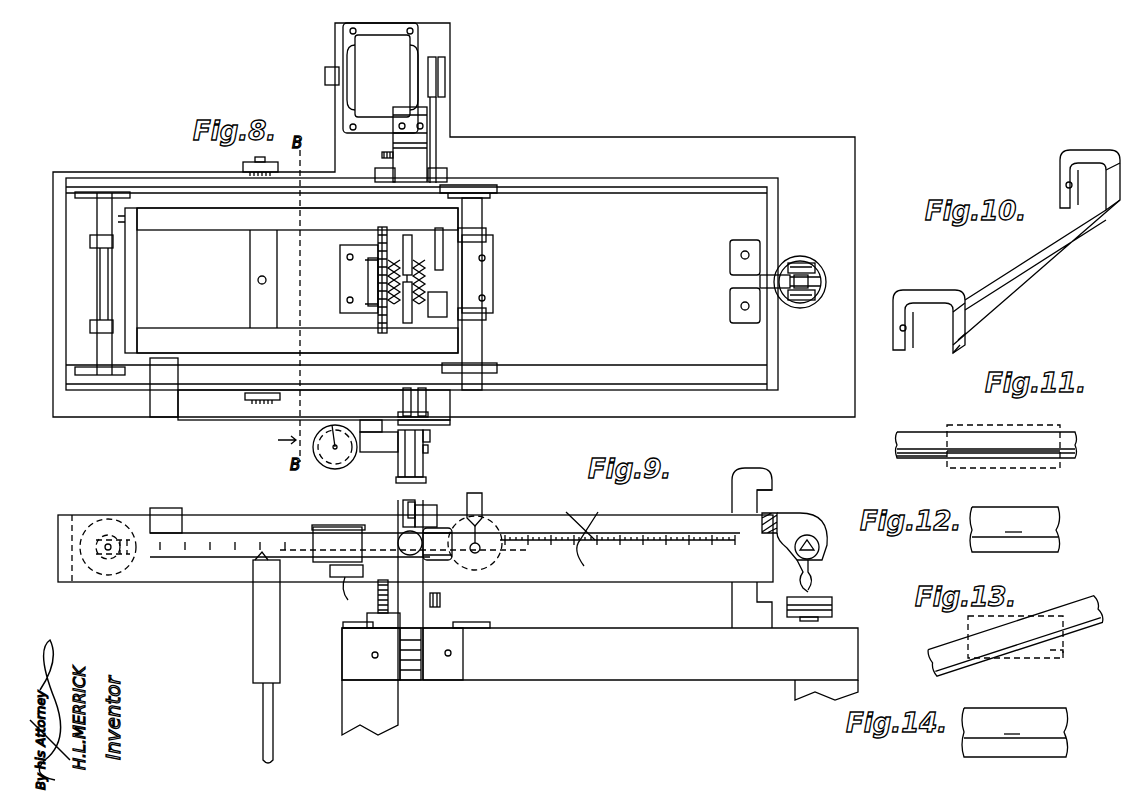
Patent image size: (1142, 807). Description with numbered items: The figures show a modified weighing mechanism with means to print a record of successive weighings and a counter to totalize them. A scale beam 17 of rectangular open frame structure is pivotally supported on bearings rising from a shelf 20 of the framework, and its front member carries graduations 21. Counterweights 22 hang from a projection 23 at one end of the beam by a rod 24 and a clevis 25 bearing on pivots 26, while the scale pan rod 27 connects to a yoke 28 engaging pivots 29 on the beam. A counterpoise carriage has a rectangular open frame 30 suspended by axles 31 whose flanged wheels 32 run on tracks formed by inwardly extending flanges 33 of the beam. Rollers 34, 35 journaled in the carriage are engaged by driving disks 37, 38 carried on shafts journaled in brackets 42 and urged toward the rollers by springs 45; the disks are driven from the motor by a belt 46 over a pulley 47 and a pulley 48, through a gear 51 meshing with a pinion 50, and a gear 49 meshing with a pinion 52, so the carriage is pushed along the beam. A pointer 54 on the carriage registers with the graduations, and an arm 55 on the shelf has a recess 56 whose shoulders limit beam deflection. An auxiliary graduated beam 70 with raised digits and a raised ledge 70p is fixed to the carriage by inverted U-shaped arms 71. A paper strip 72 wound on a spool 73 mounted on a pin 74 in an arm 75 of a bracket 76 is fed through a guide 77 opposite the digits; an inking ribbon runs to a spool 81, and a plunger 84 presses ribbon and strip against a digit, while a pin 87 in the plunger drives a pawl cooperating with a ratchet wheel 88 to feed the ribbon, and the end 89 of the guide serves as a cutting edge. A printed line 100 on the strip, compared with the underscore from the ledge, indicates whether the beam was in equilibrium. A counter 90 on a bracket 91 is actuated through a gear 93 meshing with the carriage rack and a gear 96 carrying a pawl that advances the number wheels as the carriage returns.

In FIG. 8, the scale beam 17 is at (62, 312).
In FIG. 9, the scale beam 17 is at (682, 577).
In FIG. 8, the shelf 20 is at (454, 220).
In FIG. 9, the shelf 20 is at (600, 681).
In FIG. 9, the scale 21 is at (582, 527).
In FIG. 8, the counterweights 22 is at (802, 300).
In FIG. 9, the counterweights 22 is at (812, 596).
In FIG. 8, the projection 23 is at (790, 256).
In FIG. 9, the projection 23 is at (796, 520).
In FIG. 9, the rod 24 is at (791, 580).
In FIG. 8, the clevis 25 is at (786, 303).
In FIG. 9, the clevis 25 is at (812, 572).
In FIG. 8, the pivots 26 is at (808, 262).
In FIG. 9, the pivots 26 is at (810, 540).
In FIG. 8, the rod 27 is at (258, 281).
In FIG. 9, the rod 27 is at (262, 709).
In FIG. 8, the yoke 28 is at (258, 259).
In FIG. 9, the yoke 28 is at (262, 588).
In FIG. 8, the pivots 29 is at (243, 164).
In FIG. 9, the pivots 29 is at (258, 560).
In FIG. 8, the counterpoise carriage frame 30 is at (125, 286).
In FIG. 8, the axles 31 is at (97, 219).
In FIG. 8, the flanged wheels 32 is at (118, 190).
In FIG. 8, the flanges 33 is at (678, 187).
In FIG. 8, the roller 34 is at (201, 228).
In FIG. 8, the roller 35 is at (195, 332).
In FIG. 8, the driving disk 37 is at (407, 236).
In FIG. 8, the driving disk 38 is at (407, 323).
In FIG. 8, the brackets 42 is at (350, 278).
In FIG. 9, the brackets 42 is at (343, 628).
In FIG. 8, the springs 45 is at (420, 285).
In FIG. 8, the belt 46 is at (437, 118).
In FIG. 8, the pulley 47 is at (445, 78).
In FIG. 8, the pulley 48 is at (443, 238).
In FIG. 9, the pulley 48 is at (440, 598).
In FIG. 8, the gear 49 is at (380, 336).
In FIG. 8, the pinion 50 is at (378, 250).
In FIG. 8, the gear 51 is at (381, 230).
In FIG. 8, the pinion 52 is at (374, 305).
In FIG. 8, the pointer 54 is at (482, 342).
In FIG. 9, the pointer 54 is at (482, 500).
In FIG. 8, the arm 55 is at (745, 285).
In FIG. 9, the arm 55 is at (730, 490).
In FIG. 9, the recess 56 is at (758, 492).
In FIG. 8, the auxiliary graduated beam 70 is at (205, 418).
In FIG. 9, the auxiliary graduated beam 70 is at (445, 545).
In FIG. 10, the auxiliary graduated beam 70 is at (1008, 316).
In FIG. 11, the auxiliary graduated beam 70 is at (896, 440).
In FIG. 13, the auxiliary graduated beam 70 is at (1080, 610).
In FIG. 10, the raised ledge 70p is at (970, 342).
In FIG. 11, the raised ledge 70p is at (918, 456).
In FIG. 8, the arms 71 is at (165, 400).
In FIG. 9, the arms 71 is at (164, 508).
In FIG. 10, the arms 71 is at (1094, 150).
In FIG. 8, the paper strip 72 is at (366, 422).
In FIG. 9, the paper strip 72 is at (330, 548).
In FIG. 11, the paper strip 72 is at (1058, 426).
In FIG. 12, the paper strip 72 is at (1045, 515).
In FIG. 13, the paper strip 72 is at (1064, 650).
In FIG. 14, the paper strip 72 is at (1032, 708).
In FIG. 8, the spool 73 is at (330, 456).
In FIG. 9, the spool 73 is at (332, 525).
In FIG. 8, the pin 74 is at (332, 425).
In FIG. 9, the pin 74 is at (360, 525).
In FIG. 8, the arm 75 is at (378, 452).
In FIG. 9, the arm 75 is at (345, 577).
In FIG. 8, the bracket 76 is at (423, 434).
In FIG. 9, the bracket 76 is at (394, 654).
In FIG. 8, the guide 77 is at (400, 400).
In FIG. 9, the guide 77 is at (411, 544).
In FIG. 8, the spool 81 is at (430, 440).
In FIG. 9, the spool 81 is at (410, 502).
In FIG. 8, the plunger 84 is at (426, 480).
In FIG. 9, the plunger 84 is at (410, 543).
In FIG. 8, the pin 87 is at (428, 448).
In FIG. 9, the pin 87 is at (410, 590).
In FIG. 8, the ratchet wheel 88 is at (448, 416).
In FIG. 9, the ratchet wheel 88 is at (430, 512).
In FIG. 9, the end of guide 89 is at (478, 543).
In FIG. 8, the counter 90 is at (395, 107).
In FIG. 8, the bracket 91 is at (420, 175).
In FIG. 8, the gear 93 is at (465, 185).
In FIG. 8, the gear 96 is at (382, 155).
In FIG. 11, the line 100 is at (1034, 458).
In FIG. 12, the line 100 is at (1040, 540).
In FIG. 13, the line 100 is at (1055, 658).
In FIG. 14, the line 100 is at (1048, 740).